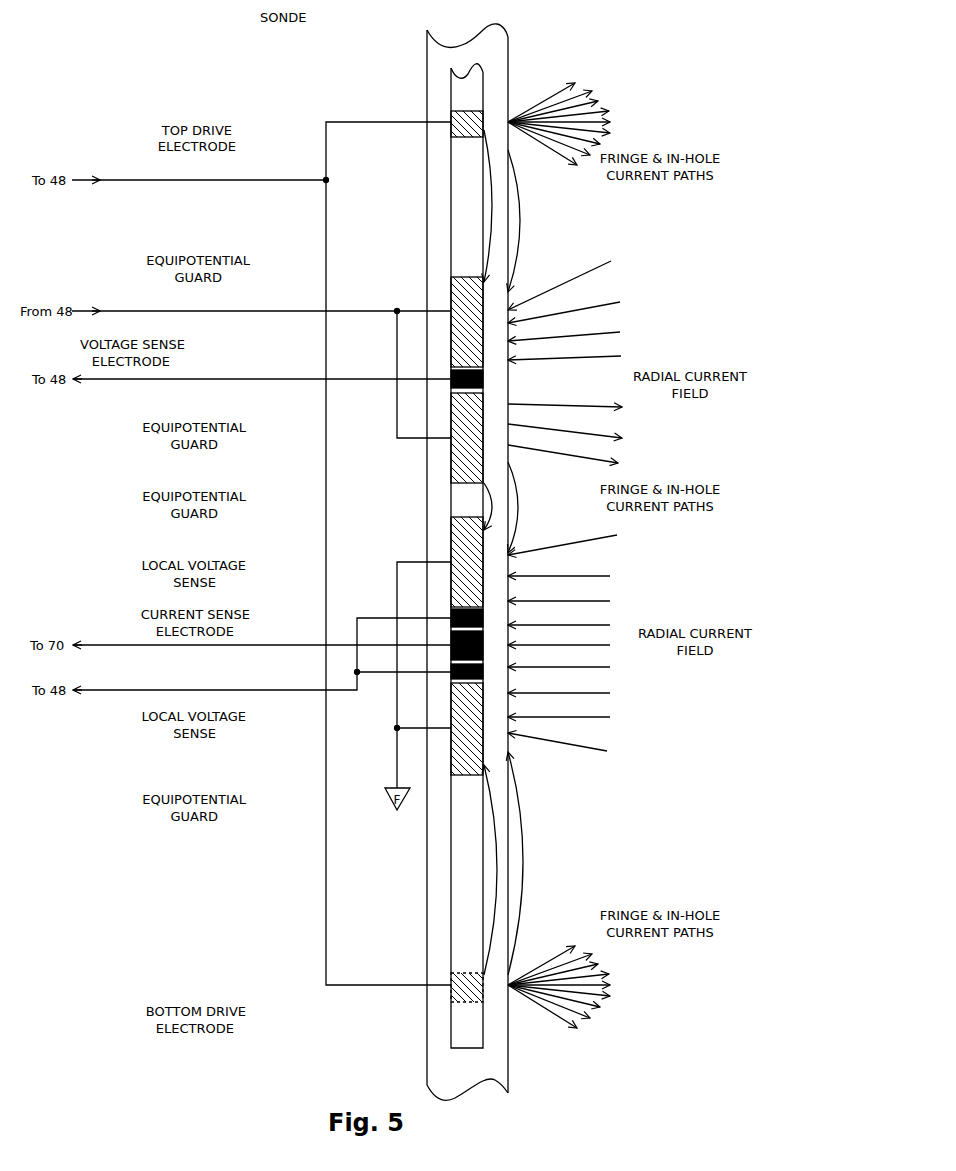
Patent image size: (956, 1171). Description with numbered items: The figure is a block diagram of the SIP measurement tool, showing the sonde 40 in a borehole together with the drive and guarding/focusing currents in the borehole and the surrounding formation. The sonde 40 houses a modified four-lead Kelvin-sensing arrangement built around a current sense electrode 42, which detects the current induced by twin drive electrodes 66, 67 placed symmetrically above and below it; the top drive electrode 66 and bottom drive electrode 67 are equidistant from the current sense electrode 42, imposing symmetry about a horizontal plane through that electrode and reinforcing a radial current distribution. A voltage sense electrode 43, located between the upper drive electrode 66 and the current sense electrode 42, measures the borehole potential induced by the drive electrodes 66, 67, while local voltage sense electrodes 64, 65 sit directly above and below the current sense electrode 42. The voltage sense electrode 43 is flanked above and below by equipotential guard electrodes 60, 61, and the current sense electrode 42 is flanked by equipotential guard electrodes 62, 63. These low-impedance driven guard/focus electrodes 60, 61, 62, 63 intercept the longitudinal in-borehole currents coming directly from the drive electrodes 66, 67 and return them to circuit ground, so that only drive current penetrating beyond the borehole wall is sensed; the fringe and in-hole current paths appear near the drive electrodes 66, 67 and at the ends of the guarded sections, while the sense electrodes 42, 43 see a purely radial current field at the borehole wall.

The sonde 40 is at (462, 80).
The drive electrode 66 is at (462, 127).
The equi-potential guard electrode 60 is at (463, 292).
The voltage sense electrode 43 is at (463, 367).
The equi-potential guard electrode 61 is at (463, 463).
The equi-potential guard electrode 62 is at (458, 540).
The local voltage sense electrode 64 is at (455, 618).
The current sense electrode 42 is at (455, 634).
The local voltage sense electrode 65 is at (465, 681).
The equi-potential guard electrode 63 is at (463, 745).
The drive electrode 67 is at (455, 989).